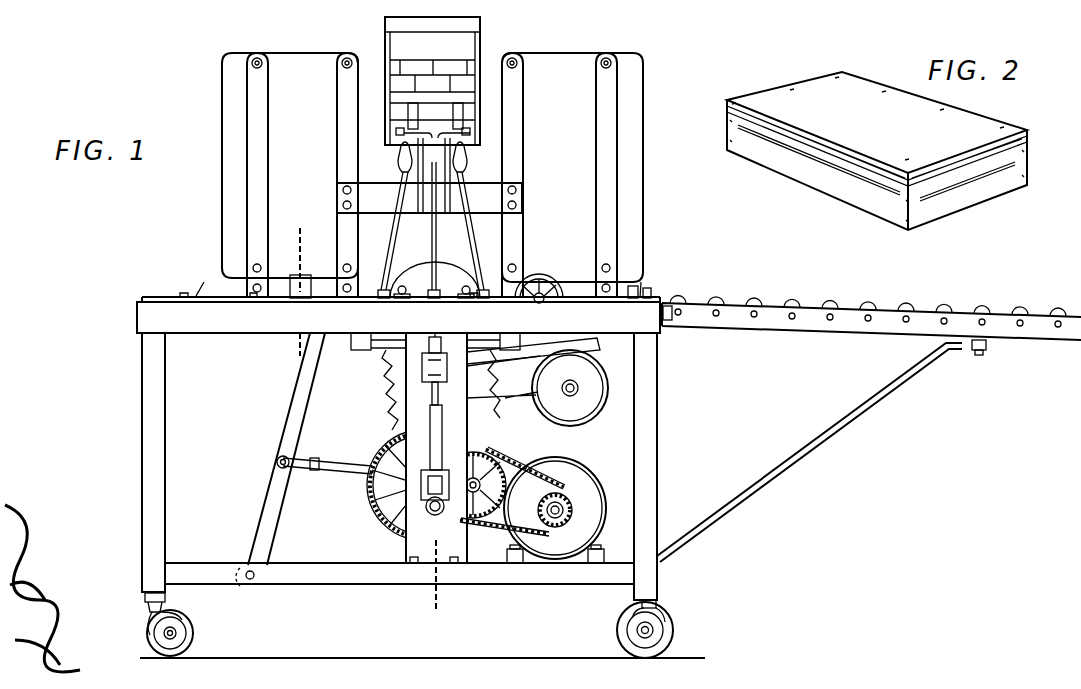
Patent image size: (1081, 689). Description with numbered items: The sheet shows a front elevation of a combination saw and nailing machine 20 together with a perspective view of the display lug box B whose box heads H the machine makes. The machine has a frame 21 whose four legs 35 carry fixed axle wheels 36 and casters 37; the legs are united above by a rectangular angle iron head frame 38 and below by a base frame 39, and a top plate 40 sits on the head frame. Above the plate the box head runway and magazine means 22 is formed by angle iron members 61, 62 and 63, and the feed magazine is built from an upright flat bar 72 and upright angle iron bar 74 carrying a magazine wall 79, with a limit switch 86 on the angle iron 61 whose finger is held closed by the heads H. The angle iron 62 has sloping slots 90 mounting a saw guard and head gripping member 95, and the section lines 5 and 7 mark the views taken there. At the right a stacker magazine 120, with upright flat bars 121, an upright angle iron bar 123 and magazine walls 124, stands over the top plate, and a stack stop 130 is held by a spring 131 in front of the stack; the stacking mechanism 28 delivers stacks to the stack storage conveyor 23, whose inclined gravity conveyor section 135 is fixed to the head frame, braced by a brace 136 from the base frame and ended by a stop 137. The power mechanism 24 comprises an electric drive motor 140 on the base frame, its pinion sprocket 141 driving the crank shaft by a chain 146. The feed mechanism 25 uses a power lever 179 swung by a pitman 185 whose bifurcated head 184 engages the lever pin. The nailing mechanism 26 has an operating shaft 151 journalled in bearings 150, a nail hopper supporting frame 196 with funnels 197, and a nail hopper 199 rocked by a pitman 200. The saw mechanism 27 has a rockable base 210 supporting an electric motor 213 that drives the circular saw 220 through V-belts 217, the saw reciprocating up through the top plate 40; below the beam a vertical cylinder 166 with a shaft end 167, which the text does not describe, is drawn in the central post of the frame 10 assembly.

In FIG. 1, the side panel 10 is at (294, 66).
In FIG. 1, the combination saw and nailing machine 20 is at (136, 243).
In FIG. 1, the frame 21 is at (140, 357).
In FIG. 1, the box head runway and magazine means 22 is at (188, 80).
In FIG. 1, the stack storage conveyor 23 is at (869, 419).
In FIG. 1, the power mechanism 24 is at (356, 518).
In FIG. 1, the feed mechanism 25 is at (275, 424).
In FIG. 1, the nailing mechanism 26 is at (492, 248).
In FIG. 1, the saw mechanism 27 is at (372, 400).
In FIG. 1, the stacking mechanism 28 is at (552, 278).
In FIG. 1, the legs 35 is at (658, 418).
In FIG. 1, the fixed axle wheels 36 is at (660, 628).
In FIG. 1, the casters 37 is at (195, 630).
In FIG. 1, the head frame 38 is at (137, 316).
In FIG. 1, the base frame 39 is at (317, 572).
In FIG. 1, the top plate 40 is at (160, 297).
In FIG. 1, the angle iron member 61 is at (206, 288).
In FIG. 1, the angle iron member 62 is at (420, 288).
In FIG. 1, the angle iron member 63 is at (650, 284).
In FIG. 1, the upright flat bar 72 is at (263, 142).
In FIG. 1, the upright angle iron bar 74 is at (338, 155).
In FIG. 1, the magazine wall 79 is at (224, 172).
In FIG. 1, the limit switch 86 is at (306, 278).
In FIG. 1, the sloping slots 90 is at (402, 286).
In FIG. 1, the saw guard and head gripping member 95 is at (444, 272).
In FIG. 1, the stacker magazine 120 is at (566, 66).
In FIG. 1, the upright flat bars 121 is at (596, 155).
In FIG. 1, the upright angle iron bar 123 is at (515, 156).
In FIG. 1, the magazine walls 124 is at (636, 78).
In FIG. 1, the stack stop 130 is at (640, 280).
In FIG. 1, the spring 131 is at (646, 300).
In FIG. 1, the inclined gravity conveyor section 135 is at (814, 320).
In FIG. 1, the brace 136 is at (827, 428).
In FIG. 1, the stop 137 is at (1080, 282).
In FIG. 1, the electric drive motor 140 is at (588, 478).
In FIG. 1, the pinion sprocket 141 is at (556, 496).
In FIG. 1, the chain 146 is at (500, 468).
In FIG. 1, the bearings 150 is at (362, 346).
In FIG. 1, the nailing mechanism operating shaft 151 is at (378, 352).
In FIG. 1, the cylinder 166 is at (436, 421).
In FIG. 1, the shaft end 167 is at (434, 515).
In FIG. 1, the power lever 179 is at (277, 485).
In FIG. 1, the bifurcated head 184 is at (316, 460).
In FIG. 1, the pitman 185 is at (342, 478).
In FIG. 1, the nail hopper supporting frame 196 is at (387, 202).
In FIG. 1, the funnels 197 is at (465, 158).
In FIG. 1, the nail hopper 199 is at (478, 40).
In FIG. 1, the pitman 200 is at (432, 236).
In FIG. 1, the rockable base 210 is at (560, 344).
In FIG. 1, the electric motor 213 is at (594, 410).
In FIG. 1, the V-belts 217 is at (518, 392).
In FIG. 1, the circular saw 220 is at (384, 386).
In FIG. 1, the section line 5 is at (298, 241).
In FIG. 1, the section line 7 is at (432, 166).
In FIG. 2, the box B is at (964, 122).
In FIG. 2, the box heads H is at (1000, 166).